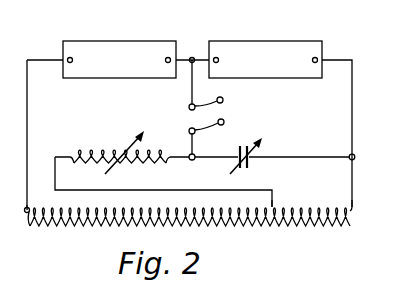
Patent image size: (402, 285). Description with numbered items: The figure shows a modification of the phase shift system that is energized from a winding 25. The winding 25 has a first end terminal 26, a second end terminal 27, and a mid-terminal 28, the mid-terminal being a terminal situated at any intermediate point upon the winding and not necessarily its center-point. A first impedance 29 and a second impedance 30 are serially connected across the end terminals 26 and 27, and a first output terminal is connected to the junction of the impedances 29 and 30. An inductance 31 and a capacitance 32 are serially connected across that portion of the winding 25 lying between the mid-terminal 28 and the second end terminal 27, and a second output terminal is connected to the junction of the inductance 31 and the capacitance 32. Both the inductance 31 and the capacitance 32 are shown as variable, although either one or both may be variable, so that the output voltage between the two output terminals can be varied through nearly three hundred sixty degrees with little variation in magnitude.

The winding 25 is at (136, 226).
The first end terminal 26 is at (27, 208).
The second end terminal 27 is at (355, 208).
The mid-terminal 28 is at (276, 206).
The first impedance 29 is at (107, 41).
The second impedance 30 is at (263, 41).
The inductance 31 is at (110, 150).
The capacitance 32 is at (248, 159).